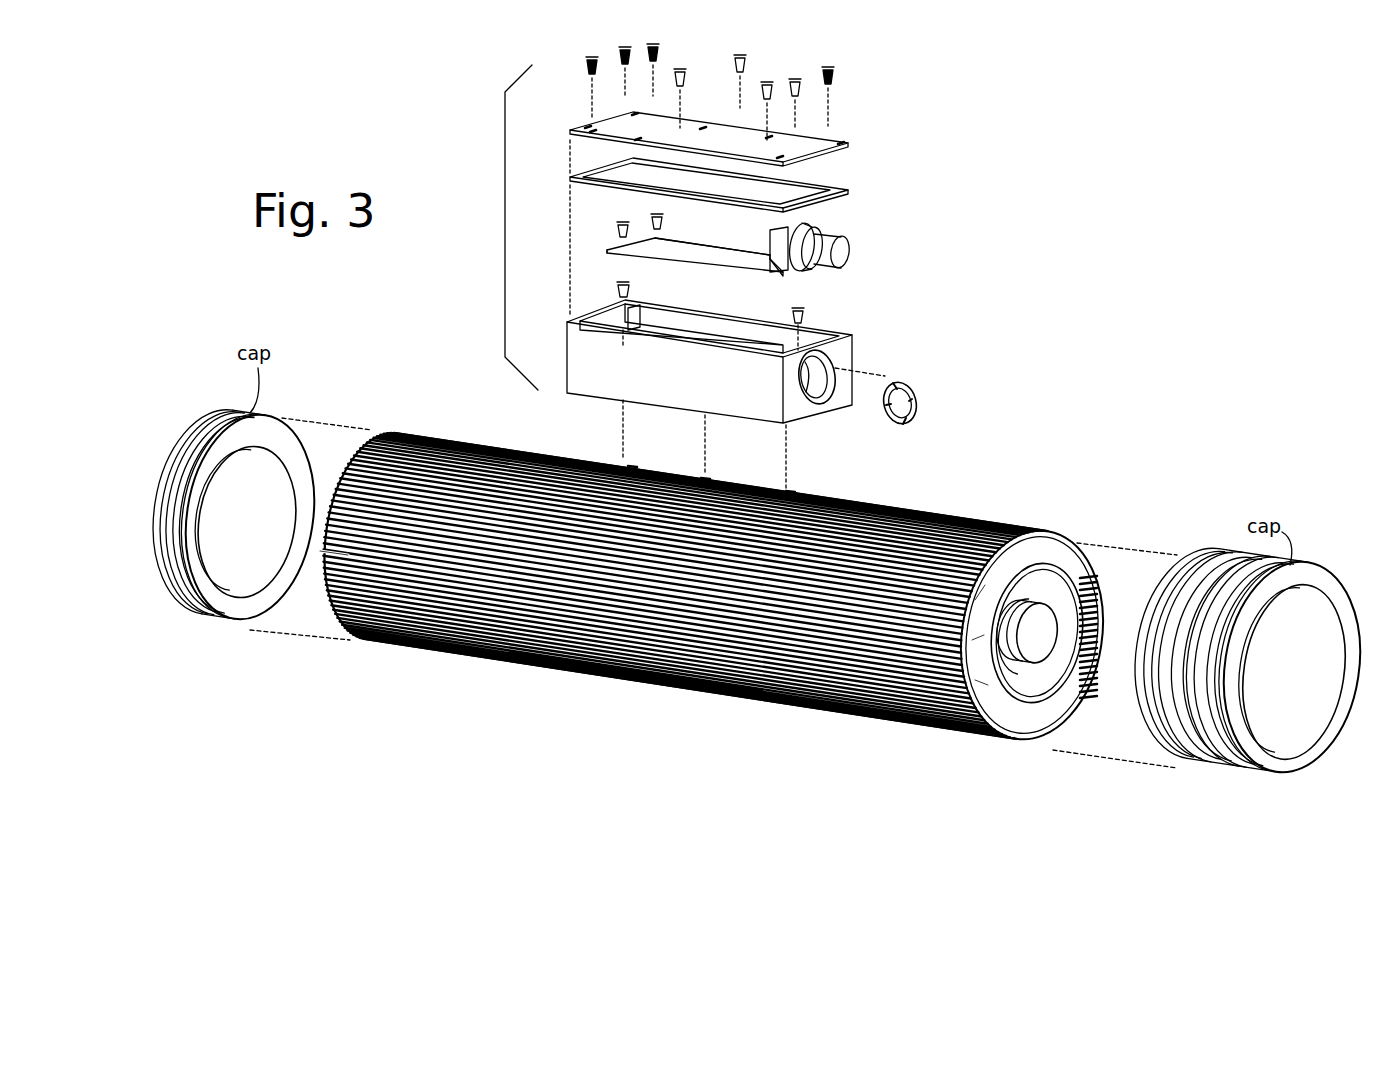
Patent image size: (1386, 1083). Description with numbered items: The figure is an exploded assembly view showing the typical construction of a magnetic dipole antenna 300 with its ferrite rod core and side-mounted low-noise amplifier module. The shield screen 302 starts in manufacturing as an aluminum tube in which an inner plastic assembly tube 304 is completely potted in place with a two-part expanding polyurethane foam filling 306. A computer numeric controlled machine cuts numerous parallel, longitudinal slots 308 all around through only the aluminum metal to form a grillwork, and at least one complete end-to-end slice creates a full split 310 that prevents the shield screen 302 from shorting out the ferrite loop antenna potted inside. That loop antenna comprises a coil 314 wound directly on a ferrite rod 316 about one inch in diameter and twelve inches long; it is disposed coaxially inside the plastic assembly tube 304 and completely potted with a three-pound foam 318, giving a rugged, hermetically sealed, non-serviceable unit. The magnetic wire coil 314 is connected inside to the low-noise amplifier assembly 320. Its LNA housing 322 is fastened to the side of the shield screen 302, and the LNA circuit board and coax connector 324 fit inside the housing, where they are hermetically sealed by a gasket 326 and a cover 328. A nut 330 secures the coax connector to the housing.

The magnetic dipole antenna 300 is at (1125, 190).
The shield screen 302 is at (737, 702).
The plastic assembly tube 304 is at (1040, 567).
The expanding polyurethane foam filling 306 is at (975, 670).
The parallel longitudinal slots 308 is at (590, 535).
The full split 310 is at (320, 553).
The coil 314 is at (1017, 667).
The ferrite rod 316 is at (1042, 622).
The foam 318 is at (1067, 633).
The low-noise amplifier (LNA) assembly 320 is at (505, 213).
The LNA housing 322 is at (833, 327).
The LNA circuit board and coax connector 324 is at (832, 232).
The gasket 326 is at (848, 182).
The cover 328 is at (848, 135).
The nut 330 is at (915, 403).